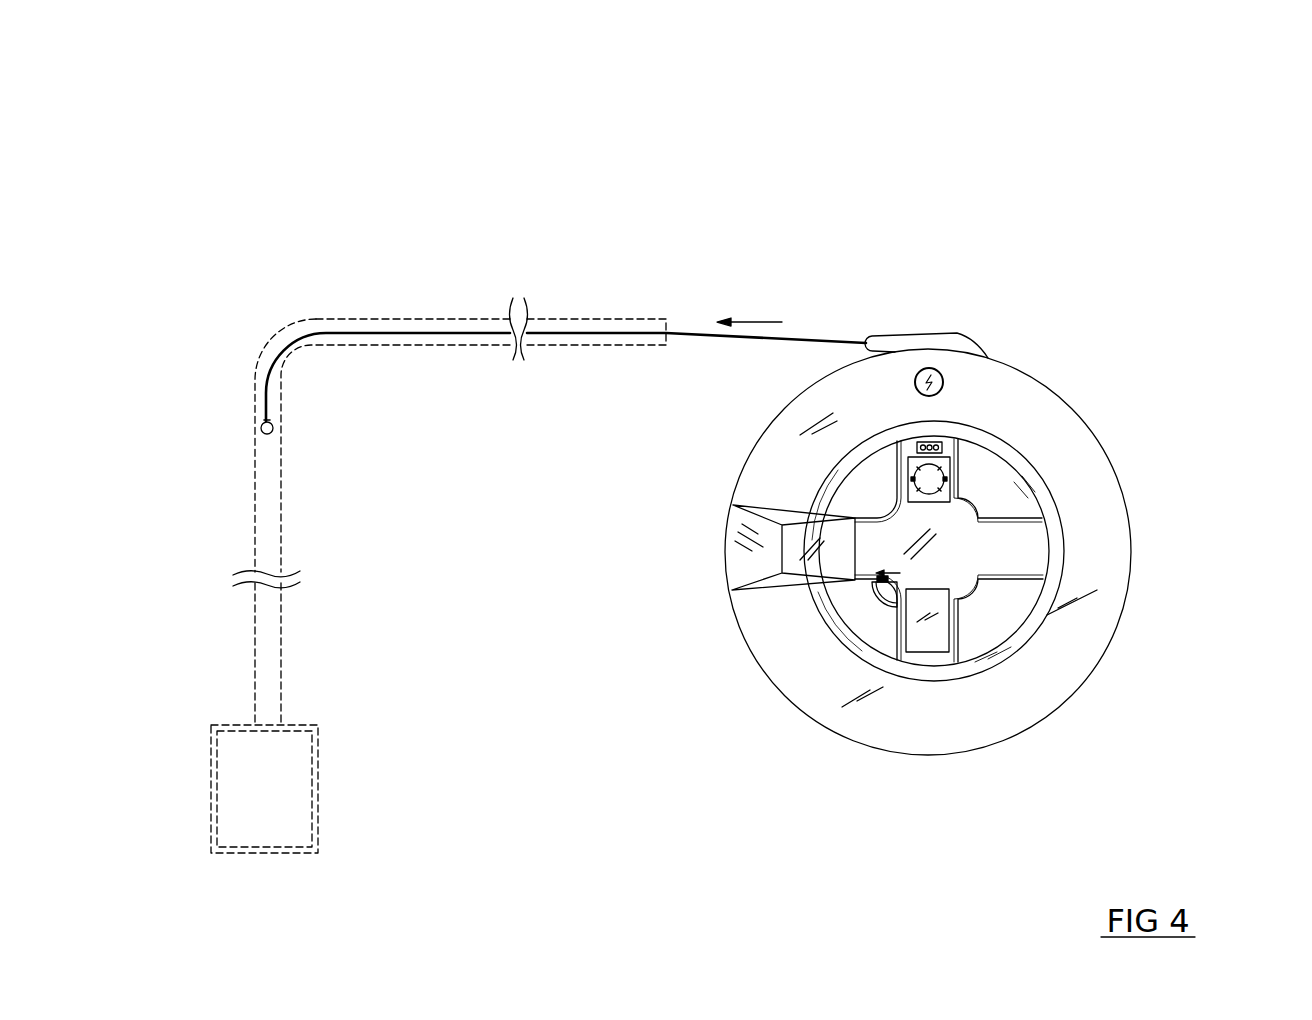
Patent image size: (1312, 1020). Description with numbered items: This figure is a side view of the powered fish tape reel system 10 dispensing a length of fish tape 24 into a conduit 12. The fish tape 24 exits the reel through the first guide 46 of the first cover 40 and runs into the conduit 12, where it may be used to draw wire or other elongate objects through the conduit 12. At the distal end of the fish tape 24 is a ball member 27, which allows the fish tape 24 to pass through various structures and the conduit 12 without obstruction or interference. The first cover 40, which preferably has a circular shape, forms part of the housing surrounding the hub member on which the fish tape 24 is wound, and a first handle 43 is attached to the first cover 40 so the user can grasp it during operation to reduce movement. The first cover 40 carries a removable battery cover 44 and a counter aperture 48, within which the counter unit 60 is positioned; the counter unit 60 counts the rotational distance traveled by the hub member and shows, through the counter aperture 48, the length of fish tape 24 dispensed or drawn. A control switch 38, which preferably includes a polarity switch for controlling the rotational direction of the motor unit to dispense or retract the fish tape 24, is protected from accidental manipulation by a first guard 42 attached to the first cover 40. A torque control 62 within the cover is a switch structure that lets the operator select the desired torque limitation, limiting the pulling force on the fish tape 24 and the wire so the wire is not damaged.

The powered fish tape reel system 10 is at (1185, 118).
The conduit 12 is at (362, 318).
The fish tape 24 is at (684, 333).
The ball member 27 is at (259, 430).
The control switch 38 is at (886, 591).
The first cover 40 is at (1073, 393).
The first guard 42 is at (878, 585).
The first handle 43 is at (928, 367).
The battery cover 44 is at (930, 638).
The first guide 46 is at (908, 338).
The counter aperture 48 is at (942, 447).
The counter unit 60 is at (937, 442).
The torque control 62 is at (917, 466).